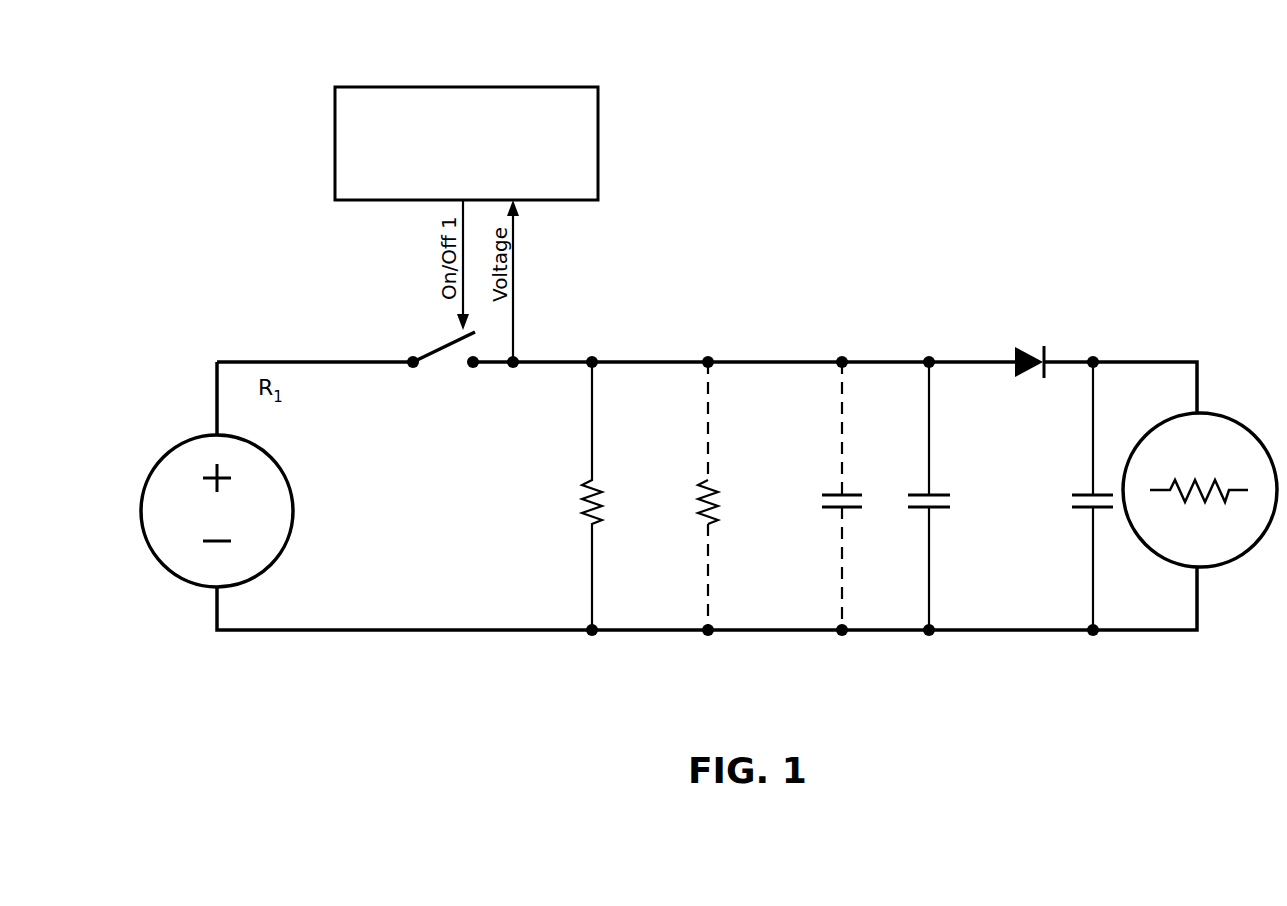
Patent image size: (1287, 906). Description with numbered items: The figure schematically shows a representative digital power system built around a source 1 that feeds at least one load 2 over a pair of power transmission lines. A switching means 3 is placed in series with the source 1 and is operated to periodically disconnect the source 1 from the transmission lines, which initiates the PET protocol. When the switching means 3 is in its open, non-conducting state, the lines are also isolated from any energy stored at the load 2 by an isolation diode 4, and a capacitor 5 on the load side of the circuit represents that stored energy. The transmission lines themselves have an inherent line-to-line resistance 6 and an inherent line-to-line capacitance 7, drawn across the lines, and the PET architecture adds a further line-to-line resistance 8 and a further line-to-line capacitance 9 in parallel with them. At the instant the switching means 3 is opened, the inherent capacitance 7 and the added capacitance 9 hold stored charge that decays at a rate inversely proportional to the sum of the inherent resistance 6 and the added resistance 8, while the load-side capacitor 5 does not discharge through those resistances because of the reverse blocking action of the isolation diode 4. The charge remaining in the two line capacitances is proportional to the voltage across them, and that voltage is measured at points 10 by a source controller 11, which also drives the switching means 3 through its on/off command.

The source 1 is at (172, 435).
The load 2 is at (1242, 415).
The switch S1 3 is at (447, 352).
The diode D1 4 is at (1047, 340).
The capacitor C3 5 is at (1073, 487).
The resistor R4 6 is at (728, 485).
The capacitor C1 7 is at (822, 487).
The resistor R3 8 is at (612, 485).
The capacitor C2 9 is at (910, 487).
The voltage sense node 10 is at (525, 347).
The source controller 11 is at (610, 128).